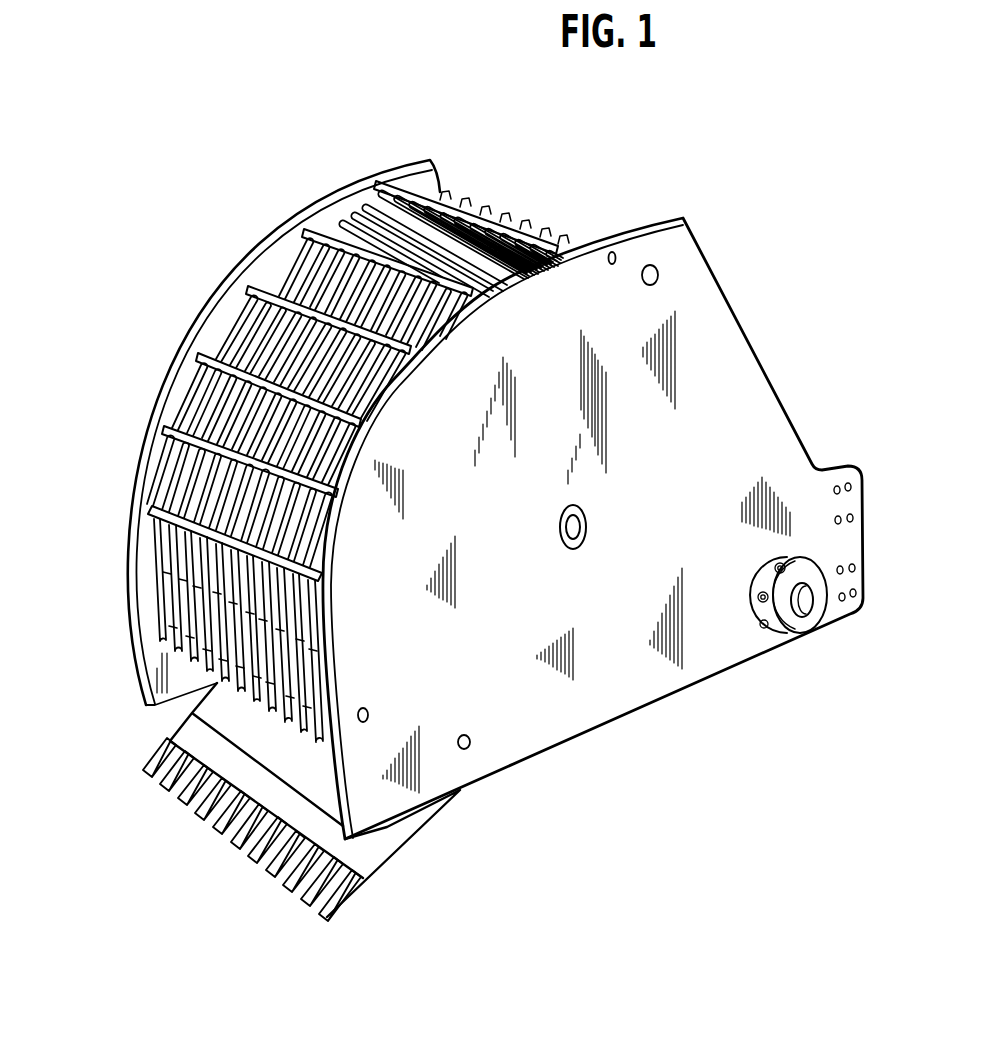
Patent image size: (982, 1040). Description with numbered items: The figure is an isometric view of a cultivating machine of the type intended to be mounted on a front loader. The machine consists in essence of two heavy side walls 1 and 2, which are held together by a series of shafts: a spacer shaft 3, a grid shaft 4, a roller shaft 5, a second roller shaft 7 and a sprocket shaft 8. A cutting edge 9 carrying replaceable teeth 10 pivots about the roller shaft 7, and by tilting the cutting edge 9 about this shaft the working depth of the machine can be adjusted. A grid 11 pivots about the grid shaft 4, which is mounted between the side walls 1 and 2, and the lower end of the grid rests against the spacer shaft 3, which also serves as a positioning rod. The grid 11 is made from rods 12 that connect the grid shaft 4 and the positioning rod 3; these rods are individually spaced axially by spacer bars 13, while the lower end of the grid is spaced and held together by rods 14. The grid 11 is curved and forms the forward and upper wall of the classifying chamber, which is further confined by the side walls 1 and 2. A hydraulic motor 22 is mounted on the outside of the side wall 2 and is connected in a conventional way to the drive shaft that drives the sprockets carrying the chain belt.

The side wall 1 is at (183, 335).
The side wall 2 is at (717, 337).
The spacer shaft (positioning rod) 3 is at (368, 714).
The grid shaft 4 is at (557, 238).
The roller shaft 5 is at (660, 275).
The roller shaft 7 is at (470, 738).
The sprocket shaft 8 is at (587, 508).
The cutting edge 9 is at (395, 848).
The replaceable teeth 10 is at (307, 893).
The grid 11 is at (346, 262).
The rods 12 is at (294, 274).
The spacer bars 13 is at (257, 290).
The rods 14 is at (220, 653).
The hydraulic motor 22 is at (789, 625).